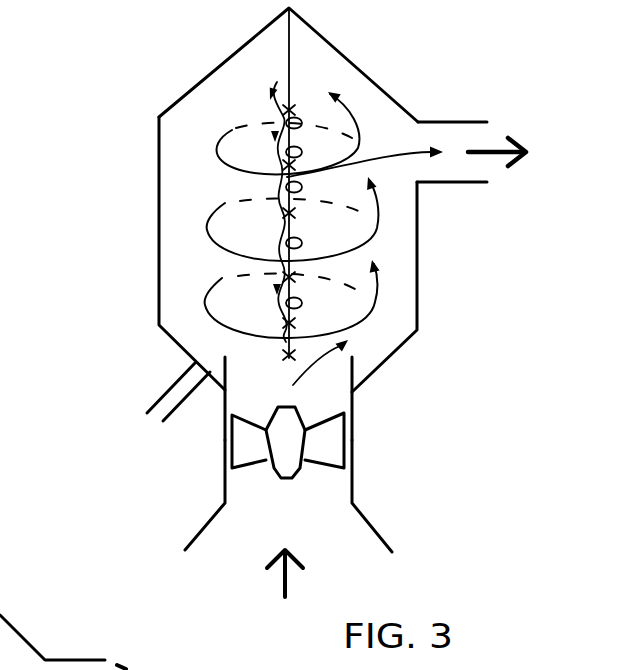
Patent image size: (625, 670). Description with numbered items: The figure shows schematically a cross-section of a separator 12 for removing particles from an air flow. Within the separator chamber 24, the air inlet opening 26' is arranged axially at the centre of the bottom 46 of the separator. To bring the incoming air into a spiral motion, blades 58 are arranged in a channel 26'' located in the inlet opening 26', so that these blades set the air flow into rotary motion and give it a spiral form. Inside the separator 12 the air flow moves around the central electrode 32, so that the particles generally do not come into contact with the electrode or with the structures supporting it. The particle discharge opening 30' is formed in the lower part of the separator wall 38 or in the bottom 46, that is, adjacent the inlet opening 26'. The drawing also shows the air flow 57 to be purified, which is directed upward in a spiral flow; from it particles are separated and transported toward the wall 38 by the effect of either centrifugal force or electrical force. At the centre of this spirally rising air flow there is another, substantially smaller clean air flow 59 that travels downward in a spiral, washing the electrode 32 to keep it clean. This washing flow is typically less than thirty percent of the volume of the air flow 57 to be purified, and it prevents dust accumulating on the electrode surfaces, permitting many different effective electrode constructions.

The separator 12 is at (150, 49).
The separator chamber 24 is at (362, 100).
The clean air flow 59 is at (217, 147).
The separator wall 38 is at (159, 185).
The air flow 57 is at (207, 228).
The electrode 32 is at (300, 197).
The particle discharge opening 30' is at (140, 389).
The bottom 46 is at (398, 352).
The blades 58 is at (247, 442).
The air inlet opening 26' is at (334, 400).
The channel 26'' is at (320, 496).